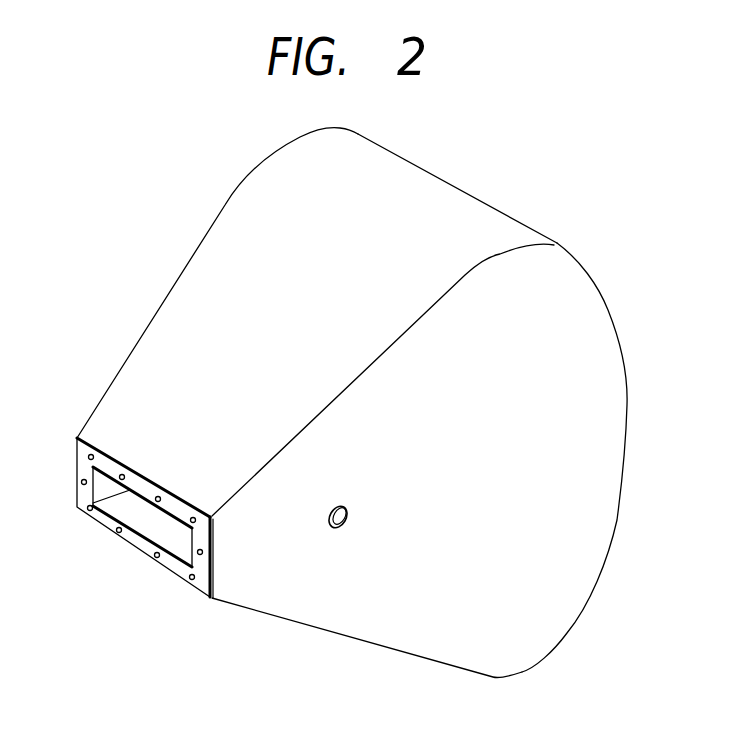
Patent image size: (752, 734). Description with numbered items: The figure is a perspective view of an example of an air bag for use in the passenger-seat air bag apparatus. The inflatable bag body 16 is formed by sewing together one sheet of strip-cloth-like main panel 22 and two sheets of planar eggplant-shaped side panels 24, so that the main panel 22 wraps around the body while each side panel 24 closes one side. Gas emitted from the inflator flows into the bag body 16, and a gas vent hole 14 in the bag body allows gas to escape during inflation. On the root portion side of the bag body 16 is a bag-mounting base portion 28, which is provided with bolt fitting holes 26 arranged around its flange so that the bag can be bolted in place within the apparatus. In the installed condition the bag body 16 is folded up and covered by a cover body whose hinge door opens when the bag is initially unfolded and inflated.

The gas vent hole 14 is at (338, 528).
The bag body 16 is at (489, 203).
The main panel 22 is at (395, 178).
The side panel 24 is at (603, 378).
The bolt fitting hole 26 is at (156, 556).
The bag-mounting base portion 28 is at (106, 519).